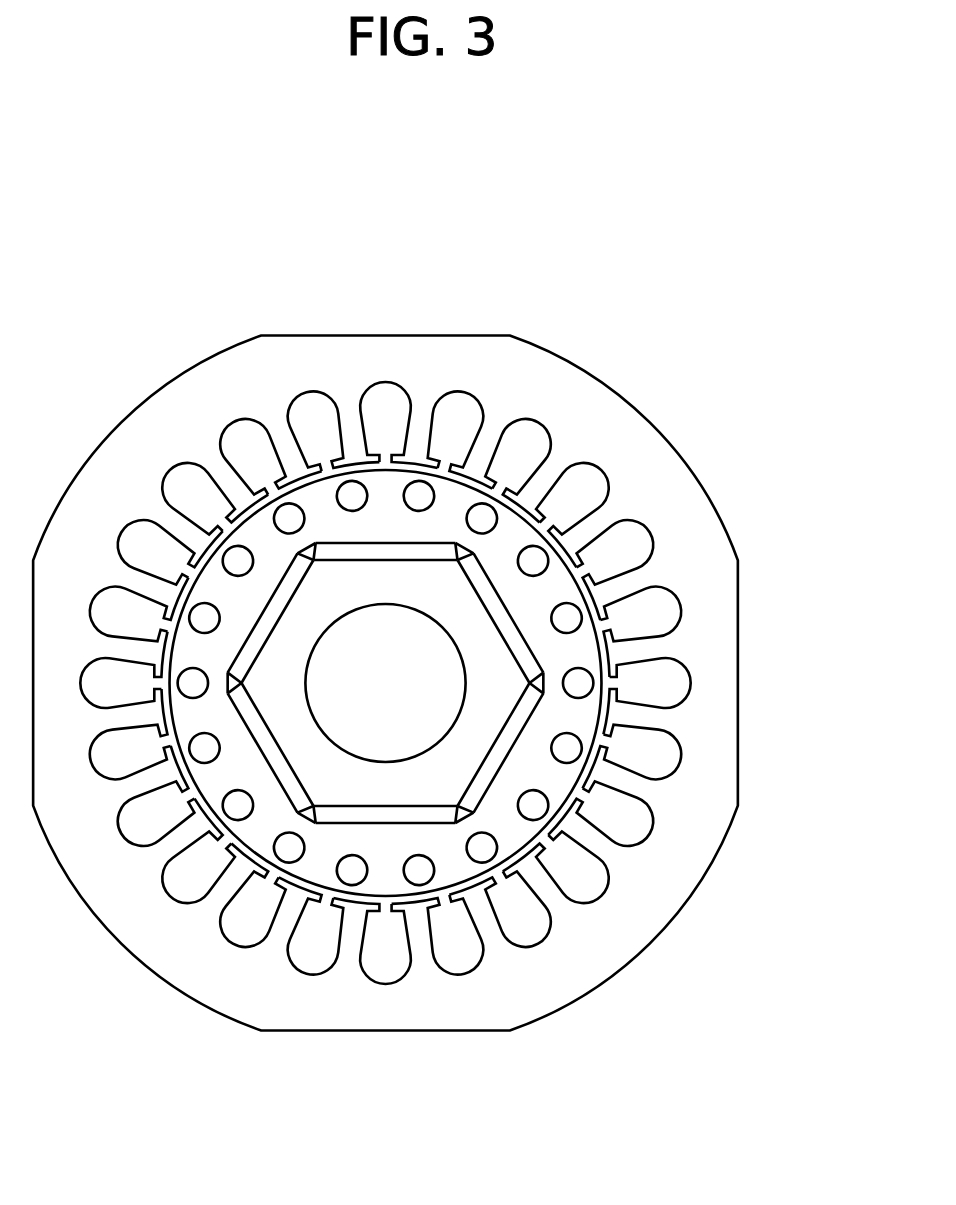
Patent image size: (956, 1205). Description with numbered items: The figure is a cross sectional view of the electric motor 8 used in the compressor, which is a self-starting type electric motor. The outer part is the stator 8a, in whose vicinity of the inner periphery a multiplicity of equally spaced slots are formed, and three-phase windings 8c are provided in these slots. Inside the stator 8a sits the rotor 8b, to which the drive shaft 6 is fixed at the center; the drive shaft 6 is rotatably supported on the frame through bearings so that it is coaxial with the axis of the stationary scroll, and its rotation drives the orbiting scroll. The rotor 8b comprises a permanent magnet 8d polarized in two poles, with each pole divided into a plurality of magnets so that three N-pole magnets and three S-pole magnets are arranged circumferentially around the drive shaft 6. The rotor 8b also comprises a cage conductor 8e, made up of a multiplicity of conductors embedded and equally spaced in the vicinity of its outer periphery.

The electric motor 8 is at (538, 315).
The stator 8a is at (183, 437).
The rotor 8b is at (457, 767).
The three-phase windings 8c is at (632, 542).
The permanent magnet 8d is at (482, 578).
The cage conductor 8e is at (565, 750).
The drive shaft 6 is at (330, 740).